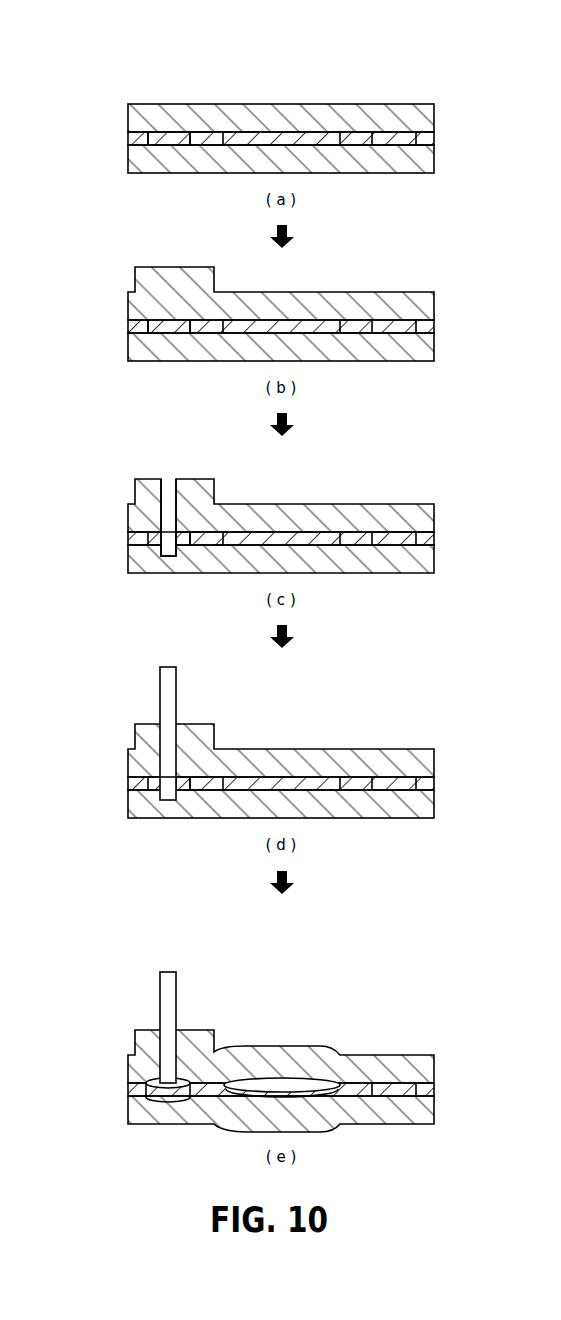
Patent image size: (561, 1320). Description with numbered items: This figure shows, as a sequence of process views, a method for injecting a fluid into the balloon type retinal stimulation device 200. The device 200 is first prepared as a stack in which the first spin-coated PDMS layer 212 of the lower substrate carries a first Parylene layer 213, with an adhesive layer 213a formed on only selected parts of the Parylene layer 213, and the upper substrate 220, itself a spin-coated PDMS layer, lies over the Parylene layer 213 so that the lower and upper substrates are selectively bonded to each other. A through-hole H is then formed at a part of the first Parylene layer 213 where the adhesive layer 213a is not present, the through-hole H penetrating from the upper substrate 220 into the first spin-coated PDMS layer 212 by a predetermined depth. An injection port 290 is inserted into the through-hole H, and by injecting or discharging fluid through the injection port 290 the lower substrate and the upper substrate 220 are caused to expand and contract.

The balloon type retinal stimulation device 200 is at (269, 583).
The first spin-coated PDMS layer 212 is at (135, 160).
The first Parylene layer 213 is at (170, 137).
The adhesive layer 213a is at (135, 140).
The upper substrate 220 is at (135, 116).
The injection port 290 is at (170, 705).
The through-hole H is at (170, 500).